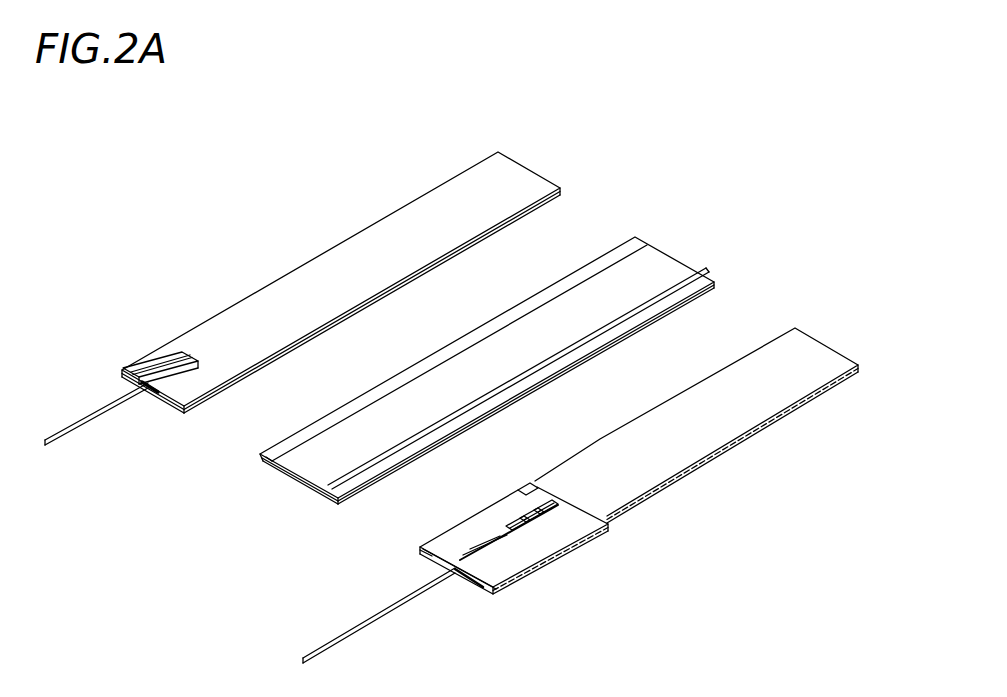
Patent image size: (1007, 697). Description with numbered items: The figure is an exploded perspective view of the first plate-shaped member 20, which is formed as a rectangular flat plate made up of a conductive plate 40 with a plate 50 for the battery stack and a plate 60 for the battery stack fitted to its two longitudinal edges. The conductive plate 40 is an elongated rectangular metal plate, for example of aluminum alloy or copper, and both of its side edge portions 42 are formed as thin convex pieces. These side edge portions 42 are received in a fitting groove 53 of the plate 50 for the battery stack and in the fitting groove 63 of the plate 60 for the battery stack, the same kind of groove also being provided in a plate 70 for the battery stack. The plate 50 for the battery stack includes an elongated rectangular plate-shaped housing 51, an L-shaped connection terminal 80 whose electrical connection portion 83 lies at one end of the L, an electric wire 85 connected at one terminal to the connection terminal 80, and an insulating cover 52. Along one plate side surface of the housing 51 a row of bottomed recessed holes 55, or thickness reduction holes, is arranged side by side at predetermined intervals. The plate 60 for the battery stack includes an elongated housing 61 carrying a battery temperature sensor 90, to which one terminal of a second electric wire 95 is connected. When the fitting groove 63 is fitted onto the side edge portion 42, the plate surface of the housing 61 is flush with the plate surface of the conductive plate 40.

The first plate-shaped member 20 is at (560, 392).
The conductive plate 40 is at (495, 328).
The side edge portion 42 is at (452, 348).
The plate for the battery stack 50 is at (586, 426).
The housing 51 is at (718, 388).
The insulating cover 52 is at (463, 515).
The fitting groove 53 is at (427, 557).
The recessed hole 55 is at (813, 402).
The plate for the battery stack 60 is at (352, 283).
The housing 61 is at (290, 282).
The fitting groove 63 is at (206, 407).
The plate for the battery stack 70 is at (577, 694).
The connection terminal 80 is at (545, 453).
The electrical connection portion 83 is at (529, 483).
The electric wire 85 is at (381, 621).
The battery temperature sensor 90 is at (172, 358).
The electric wire 95 is at (92, 426).